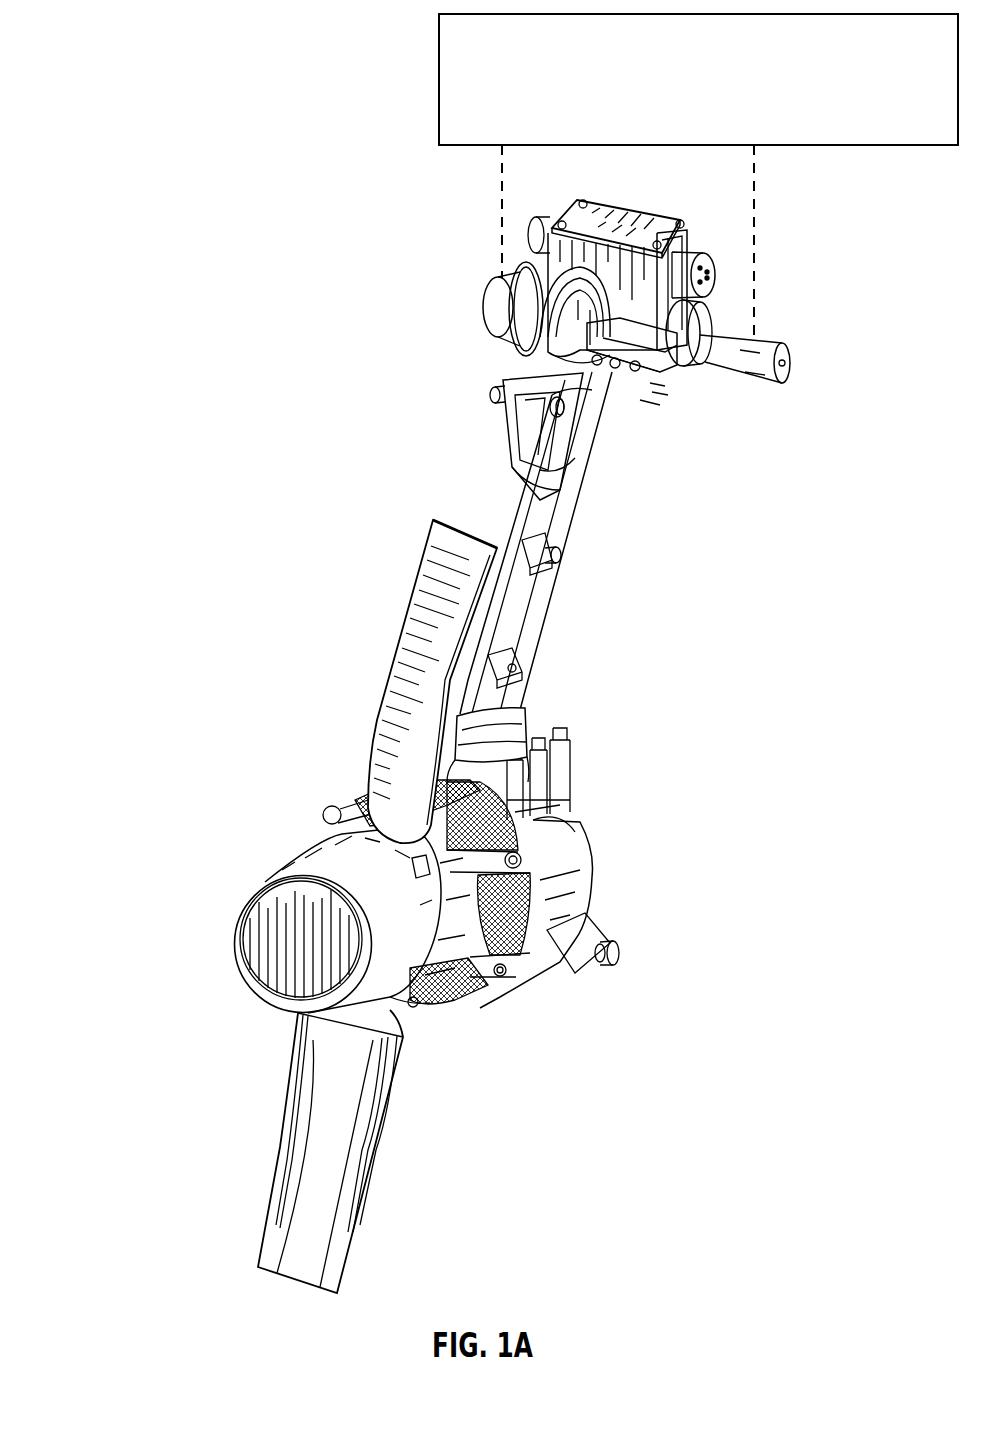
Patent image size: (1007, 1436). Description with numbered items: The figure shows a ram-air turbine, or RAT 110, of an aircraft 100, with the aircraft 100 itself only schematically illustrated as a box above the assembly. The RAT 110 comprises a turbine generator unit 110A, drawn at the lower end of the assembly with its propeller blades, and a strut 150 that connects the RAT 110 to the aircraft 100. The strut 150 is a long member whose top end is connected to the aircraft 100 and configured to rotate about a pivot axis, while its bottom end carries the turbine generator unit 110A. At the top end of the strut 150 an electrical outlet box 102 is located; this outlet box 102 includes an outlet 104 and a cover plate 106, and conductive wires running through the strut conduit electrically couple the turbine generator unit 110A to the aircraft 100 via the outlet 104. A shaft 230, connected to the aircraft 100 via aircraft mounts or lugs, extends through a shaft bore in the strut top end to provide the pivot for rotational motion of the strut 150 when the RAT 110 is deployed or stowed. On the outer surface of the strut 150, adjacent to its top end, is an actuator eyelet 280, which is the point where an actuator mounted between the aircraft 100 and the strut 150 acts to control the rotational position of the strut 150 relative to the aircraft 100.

The aircraft 100 is at (722, 91).
The electrical outlet box 102 is at (622, 288).
The outlet 104 is at (714, 272).
The cover plate 106 is at (633, 224).
The ram-air turbine (RAT) 110 is at (128, 901).
The turbine generator unit 110A is at (573, 880).
The strut 150 is at (552, 518).
The shaft 230 is at (790, 380).
The actuator eyelet 280 is at (505, 407).